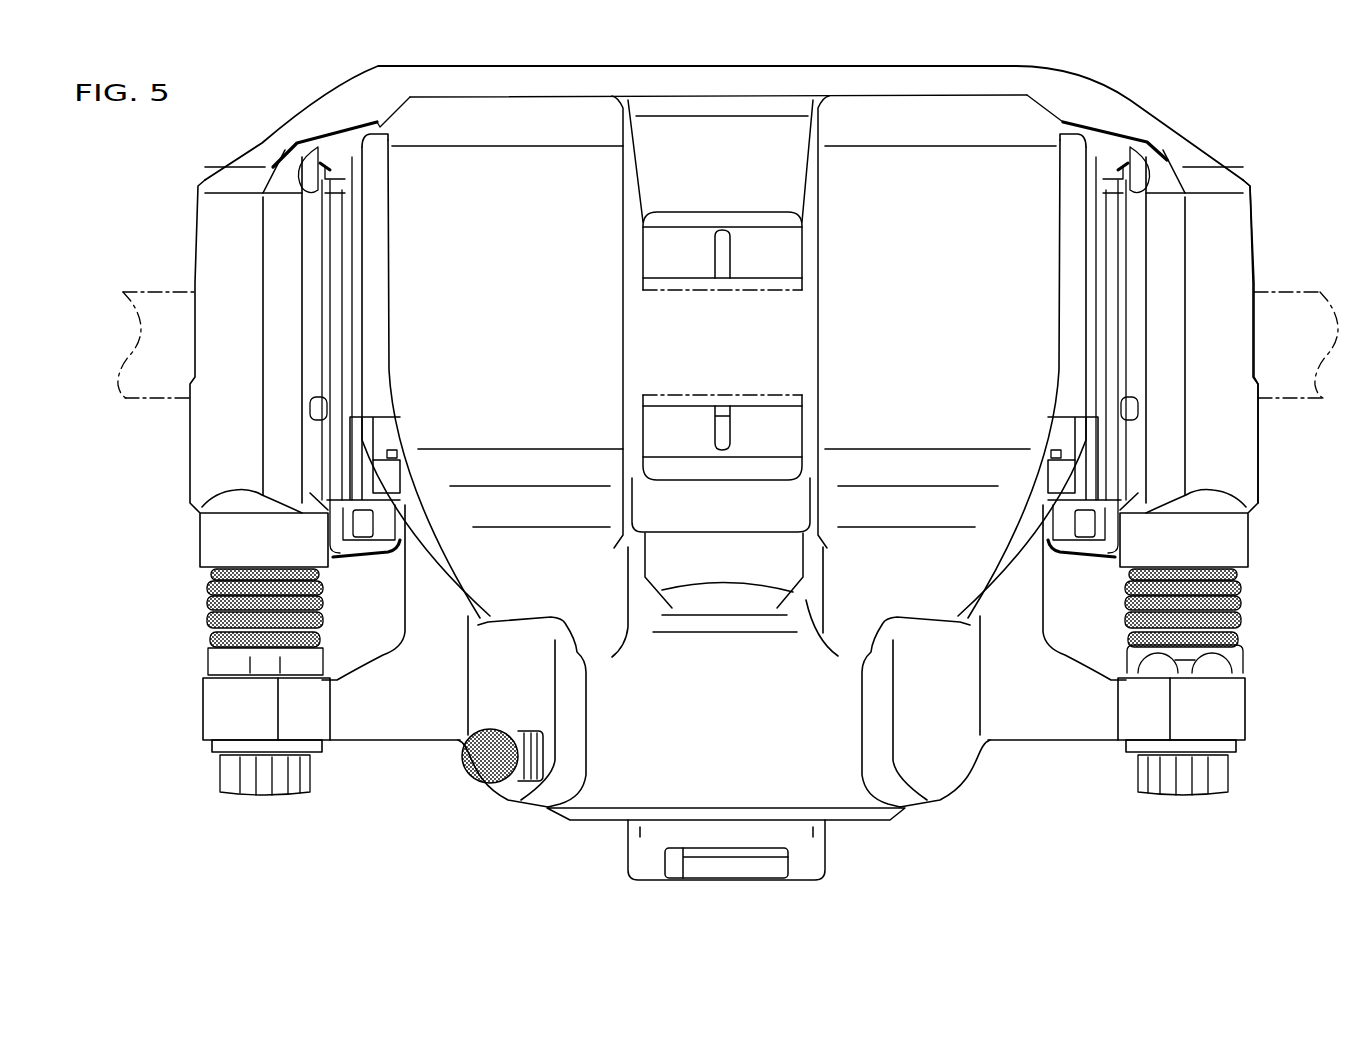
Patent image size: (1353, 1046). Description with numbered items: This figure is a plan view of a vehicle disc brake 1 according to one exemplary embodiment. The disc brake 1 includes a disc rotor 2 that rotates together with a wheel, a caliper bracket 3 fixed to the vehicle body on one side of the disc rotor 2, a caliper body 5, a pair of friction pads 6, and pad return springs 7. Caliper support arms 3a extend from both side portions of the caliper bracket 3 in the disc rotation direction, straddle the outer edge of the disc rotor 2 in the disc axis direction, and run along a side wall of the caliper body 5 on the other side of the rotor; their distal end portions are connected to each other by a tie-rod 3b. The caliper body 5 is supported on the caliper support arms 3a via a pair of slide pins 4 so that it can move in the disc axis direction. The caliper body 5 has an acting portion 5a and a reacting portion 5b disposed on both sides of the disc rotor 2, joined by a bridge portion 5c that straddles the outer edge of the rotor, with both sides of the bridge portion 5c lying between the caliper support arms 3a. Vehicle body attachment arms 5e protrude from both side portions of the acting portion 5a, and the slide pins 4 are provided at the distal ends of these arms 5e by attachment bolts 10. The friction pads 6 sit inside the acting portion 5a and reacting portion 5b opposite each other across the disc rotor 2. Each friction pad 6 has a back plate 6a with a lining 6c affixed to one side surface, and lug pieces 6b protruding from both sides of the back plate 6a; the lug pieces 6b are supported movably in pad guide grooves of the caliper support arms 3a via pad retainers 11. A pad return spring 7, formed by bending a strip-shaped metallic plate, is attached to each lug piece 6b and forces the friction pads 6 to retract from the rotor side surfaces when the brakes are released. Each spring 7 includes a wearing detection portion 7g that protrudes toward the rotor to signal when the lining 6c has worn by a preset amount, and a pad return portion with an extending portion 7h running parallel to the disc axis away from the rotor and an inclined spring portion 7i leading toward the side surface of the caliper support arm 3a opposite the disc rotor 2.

The vehicle disc brake 1 is at (726, 45).
The disc rotor 2 is at (1290, 292).
The caliper bracket 3 is at (758, 264).
The caliper support arm 3a is at (207, 457).
The tie-rod 3b is at (673, 80).
The slide pin 4 is at (210, 660).
The caliper body 5 is at (724, 460).
The acting portion 5a is at (607, 810).
The reacting portion 5b is at (952, 94).
The bridge portion 5c is at (820, 328).
The vehicle body attachment arm 5e is at (383, 742).
The friction pad 6 is at (724, 315).
The back plate 6a is at (754, 217).
The lug piece 6b is at (390, 478).
The lining 6c is at (740, 233).
The pad return spring 7 is at (283, 147).
The wearing detection portion 7g is at (397, 455).
The extending portion 7h is at (390, 540).
The spring portion 7i is at (300, 143).
The attachment bolt 10 is at (260, 797).
The pad retainer 11 is at (333, 340).